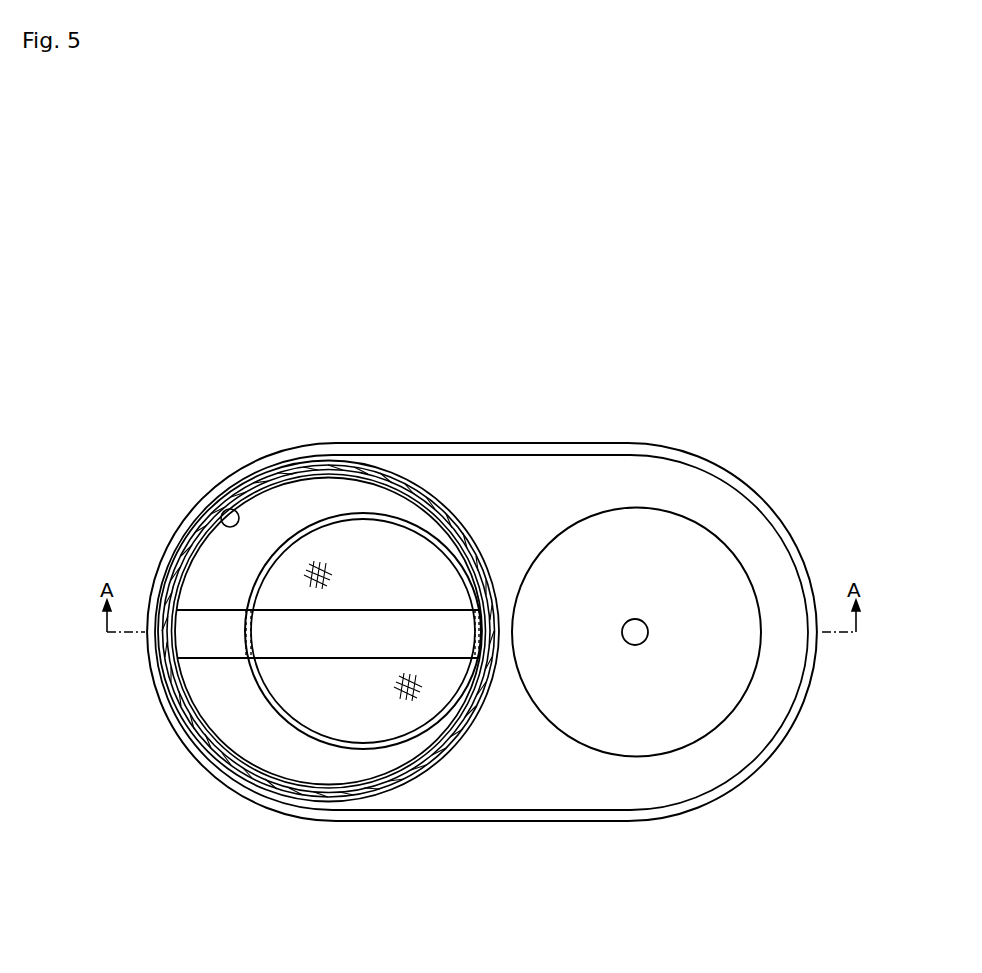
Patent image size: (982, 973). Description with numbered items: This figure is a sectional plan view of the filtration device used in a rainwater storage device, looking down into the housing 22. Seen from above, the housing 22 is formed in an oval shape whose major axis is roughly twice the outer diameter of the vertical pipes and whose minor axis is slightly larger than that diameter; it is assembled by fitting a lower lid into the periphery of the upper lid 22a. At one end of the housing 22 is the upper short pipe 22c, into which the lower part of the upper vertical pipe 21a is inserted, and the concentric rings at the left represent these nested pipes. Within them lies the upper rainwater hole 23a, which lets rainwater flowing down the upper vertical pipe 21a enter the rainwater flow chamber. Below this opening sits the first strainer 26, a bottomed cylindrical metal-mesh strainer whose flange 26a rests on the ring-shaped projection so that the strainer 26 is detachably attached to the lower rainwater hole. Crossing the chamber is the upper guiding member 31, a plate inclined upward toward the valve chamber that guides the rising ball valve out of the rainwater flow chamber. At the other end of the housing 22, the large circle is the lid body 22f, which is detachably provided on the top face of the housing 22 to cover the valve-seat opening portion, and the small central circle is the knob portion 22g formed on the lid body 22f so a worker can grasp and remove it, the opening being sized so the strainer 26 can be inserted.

The upper vertical pipe 21a is at (320, 468).
The housing 22 is at (579, 440).
The upper lid 22a is at (532, 472).
The upper short pipe 22c is at (388, 470).
The lid body 22f is at (629, 540).
The knob portion 22g is at (641, 621).
The upper rainwater hole 23a is at (208, 513).
The first strainer 26 is at (383, 722).
The flange 26a is at (325, 751).
The upper guiding member 31 is at (217, 659).